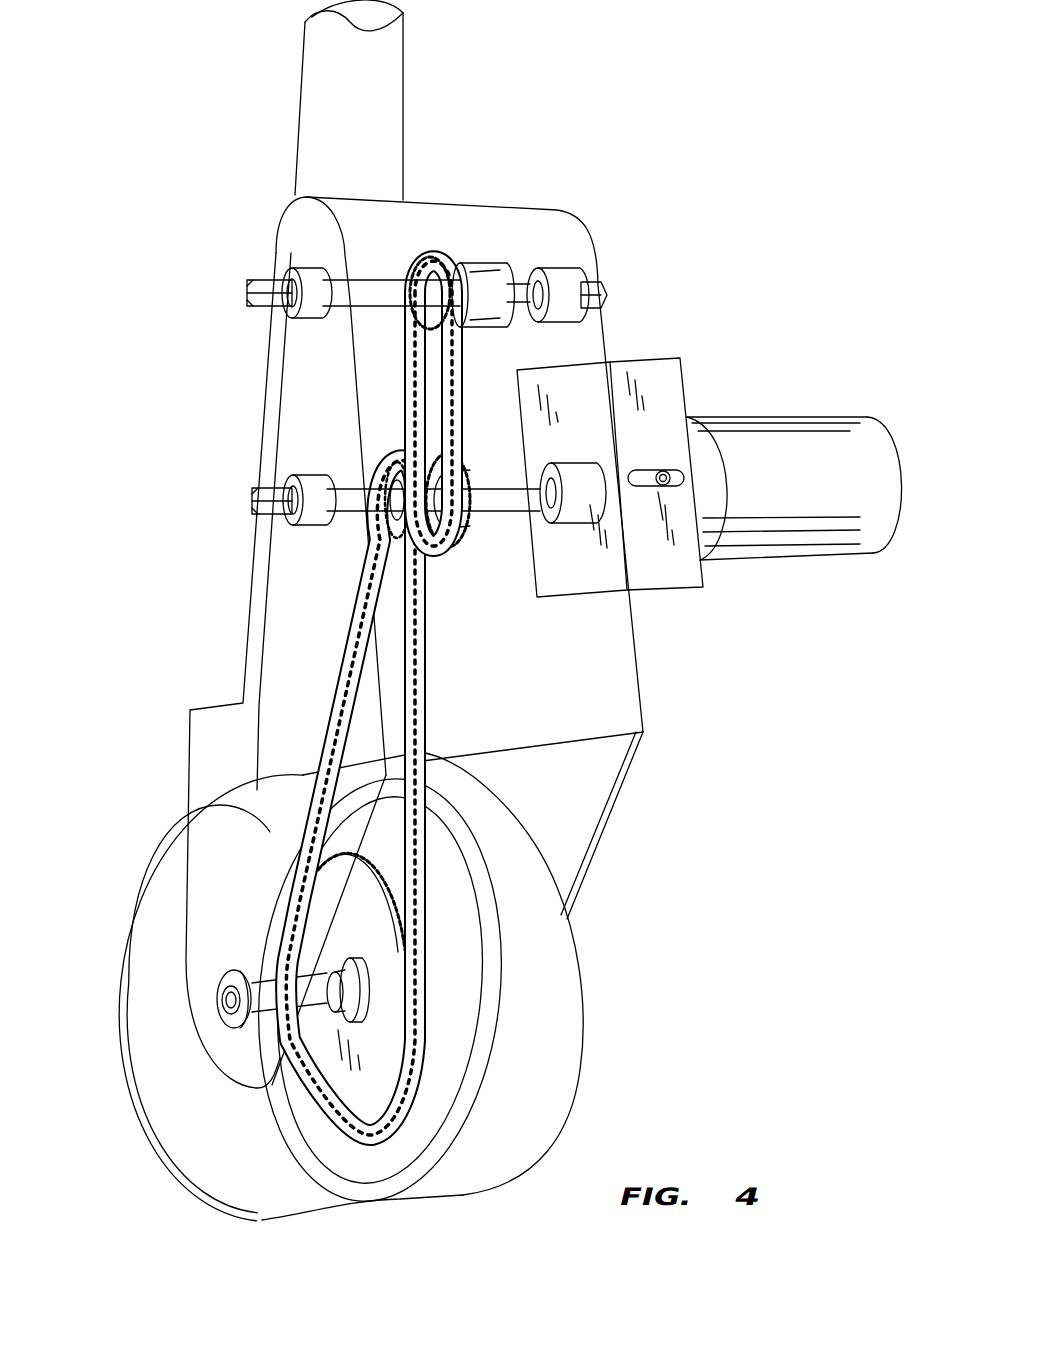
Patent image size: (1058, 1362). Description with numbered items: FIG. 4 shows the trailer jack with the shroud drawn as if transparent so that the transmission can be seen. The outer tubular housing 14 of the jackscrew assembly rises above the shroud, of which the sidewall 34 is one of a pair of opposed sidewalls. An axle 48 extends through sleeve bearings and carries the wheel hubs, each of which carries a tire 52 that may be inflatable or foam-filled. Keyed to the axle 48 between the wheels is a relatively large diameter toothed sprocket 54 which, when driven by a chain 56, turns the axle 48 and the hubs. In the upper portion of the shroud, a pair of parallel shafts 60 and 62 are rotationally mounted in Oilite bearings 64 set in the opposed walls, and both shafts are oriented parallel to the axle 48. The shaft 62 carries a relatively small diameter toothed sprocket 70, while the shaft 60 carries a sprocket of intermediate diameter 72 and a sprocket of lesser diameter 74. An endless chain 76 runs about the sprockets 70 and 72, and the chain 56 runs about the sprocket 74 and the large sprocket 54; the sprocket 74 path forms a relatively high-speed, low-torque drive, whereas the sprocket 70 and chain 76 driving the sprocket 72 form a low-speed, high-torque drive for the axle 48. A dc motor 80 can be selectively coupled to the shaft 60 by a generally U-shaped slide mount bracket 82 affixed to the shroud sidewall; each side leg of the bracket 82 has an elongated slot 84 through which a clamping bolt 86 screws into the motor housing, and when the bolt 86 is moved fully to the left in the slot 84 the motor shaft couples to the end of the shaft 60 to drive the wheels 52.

The outer tubular housing 14 is at (400, 112).
The sidewall 34 is at (316, 621).
The axle 48 is at (228, 997).
The tire 52 is at (551, 930).
The toothed sprocket 54 is at (350, 1073).
The chain 56 is at (428, 713).
The shaft 60 is at (260, 496).
The shaft 62 is at (246, 285).
The Oilite bearings 64 is at (300, 265).
The toothed sprocket 70 is at (405, 318).
The sprocket of intermediate diameter 72 is at (420, 457).
The sprocket of lesser diameter 74 is at (383, 474).
The endless chain 76 is at (460, 376).
The dc motor 80 is at (777, 416).
The slide mount bracket 82 is at (670, 358).
The elongated slot 84 is at (642, 480).
The clamping bolt 86 is at (700, 560).